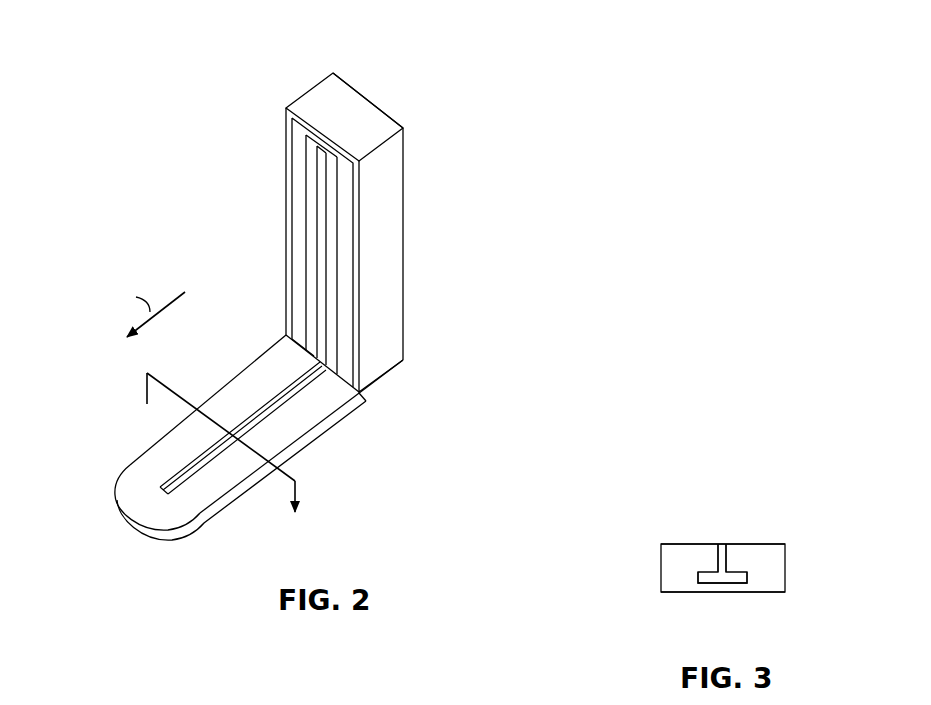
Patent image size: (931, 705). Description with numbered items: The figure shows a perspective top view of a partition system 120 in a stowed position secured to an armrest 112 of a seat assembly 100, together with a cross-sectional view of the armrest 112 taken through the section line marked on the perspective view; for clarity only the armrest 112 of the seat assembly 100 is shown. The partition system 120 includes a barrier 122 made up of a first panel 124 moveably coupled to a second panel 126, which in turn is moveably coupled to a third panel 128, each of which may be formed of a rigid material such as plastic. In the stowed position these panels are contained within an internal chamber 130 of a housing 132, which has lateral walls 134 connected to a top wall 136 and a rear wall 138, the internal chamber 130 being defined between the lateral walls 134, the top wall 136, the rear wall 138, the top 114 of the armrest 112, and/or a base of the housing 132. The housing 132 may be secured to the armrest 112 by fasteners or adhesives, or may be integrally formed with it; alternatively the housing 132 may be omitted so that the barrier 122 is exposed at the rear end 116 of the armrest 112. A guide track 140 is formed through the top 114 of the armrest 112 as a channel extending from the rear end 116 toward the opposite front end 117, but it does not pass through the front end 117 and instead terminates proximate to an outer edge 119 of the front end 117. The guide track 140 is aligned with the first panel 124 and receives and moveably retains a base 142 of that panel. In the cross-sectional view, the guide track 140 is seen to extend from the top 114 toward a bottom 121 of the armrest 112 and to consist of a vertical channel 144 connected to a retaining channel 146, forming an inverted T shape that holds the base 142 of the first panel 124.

In FIG. 2, the seat assembly 100 is at (120, 488).
In FIG. 2, the armrest 112 is at (303, 440).
In FIG. 3, the armrest 112 is at (650, 546).
In FIG. 2, the top 114 is at (260, 385).
In FIG. 3, the top 114 is at (755, 545).
In FIG. 2, the rear end 116 is at (356, 400).
In FIG. 2, the front end 117 is at (130, 518).
In FIG. 2, the outer edge 119 is at (118, 500).
In FIG. 2, the partition system 120 is at (270, 60).
In FIG. 3, the bottom 121 is at (742, 594).
In FIG. 2, the barrier 122 is at (312, 193).
In FIG. 2, the first panel 124 is at (332, 186).
In FIG. 2, the second panel 126 is at (338, 86).
In FIG. 2, the third panel 128 is at (320, 152).
In FIG. 2, the internal chamber 130 is at (298, 263).
In FIG. 2, the housing 132 is at (378, 277).
In FIG. 2, the lateral walls 134 is at (288, 176).
In FIG. 2, the top wall 136 is at (365, 130).
In FIG. 2, the rear wall 138 is at (405, 148).
In FIG. 2, the guide track 140 is at (208, 466).
In FIG. 3, the guide track 140 is at (722, 540).
In FIG. 2, the base 142 is at (325, 365).
In FIG. 3, the vertical channel 144 is at (722, 558).
In FIG. 3, the retaining channel 146 is at (708, 577).